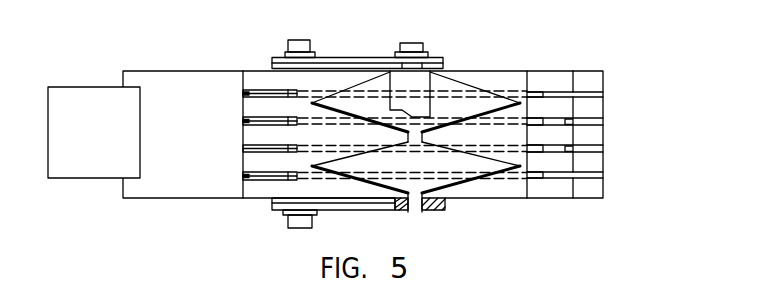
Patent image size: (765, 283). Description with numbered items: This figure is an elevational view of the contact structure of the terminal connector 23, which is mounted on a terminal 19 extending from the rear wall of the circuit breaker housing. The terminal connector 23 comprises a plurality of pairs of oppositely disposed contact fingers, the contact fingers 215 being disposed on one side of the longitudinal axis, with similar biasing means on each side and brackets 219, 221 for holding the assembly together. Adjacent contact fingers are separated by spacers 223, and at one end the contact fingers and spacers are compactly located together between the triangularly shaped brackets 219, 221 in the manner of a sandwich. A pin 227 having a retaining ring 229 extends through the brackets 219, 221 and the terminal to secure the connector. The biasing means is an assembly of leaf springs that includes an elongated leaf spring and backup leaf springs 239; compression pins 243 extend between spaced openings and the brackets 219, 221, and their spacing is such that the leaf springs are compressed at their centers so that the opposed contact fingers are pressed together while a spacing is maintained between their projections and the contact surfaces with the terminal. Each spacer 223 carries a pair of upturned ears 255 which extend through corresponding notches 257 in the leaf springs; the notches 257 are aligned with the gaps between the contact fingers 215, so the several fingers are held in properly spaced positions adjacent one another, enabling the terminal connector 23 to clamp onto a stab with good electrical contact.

The terminal 19 is at (157, 187).
The terminal connector 23 is at (463, 239).
The contact finger 215 is at (597, 82).
The bracket 219 is at (442, 58).
The bracket 221 is at (375, 212).
The spacer 223 is at (288, 117).
The pin 227 is at (300, 42).
The retaining ring 229 is at (313, 53).
The backup leaf spring 239 is at (458, 184).
The compression pin 243 is at (412, 43).
The ear 255 is at (288, 126).
The notch 257 is at (243, 93).